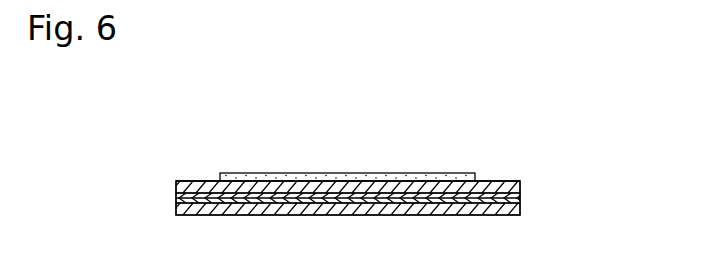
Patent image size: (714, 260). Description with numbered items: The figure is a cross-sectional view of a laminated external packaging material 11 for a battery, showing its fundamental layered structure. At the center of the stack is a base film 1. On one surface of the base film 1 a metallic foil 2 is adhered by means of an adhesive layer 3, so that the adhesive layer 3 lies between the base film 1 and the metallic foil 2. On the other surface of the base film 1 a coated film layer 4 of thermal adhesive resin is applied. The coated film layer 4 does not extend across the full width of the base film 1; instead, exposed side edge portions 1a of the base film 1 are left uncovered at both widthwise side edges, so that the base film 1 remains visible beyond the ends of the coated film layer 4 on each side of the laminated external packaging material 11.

The base film 1 is at (523, 184).
The exposed side edge portion 1a is at (207, 180).
The metallic foil 2 is at (521, 207).
The adhesive layer 3 is at (521, 195).
The coated film layer 4 is at (304, 173).
The laminated external packaging material 11 is at (427, 145).